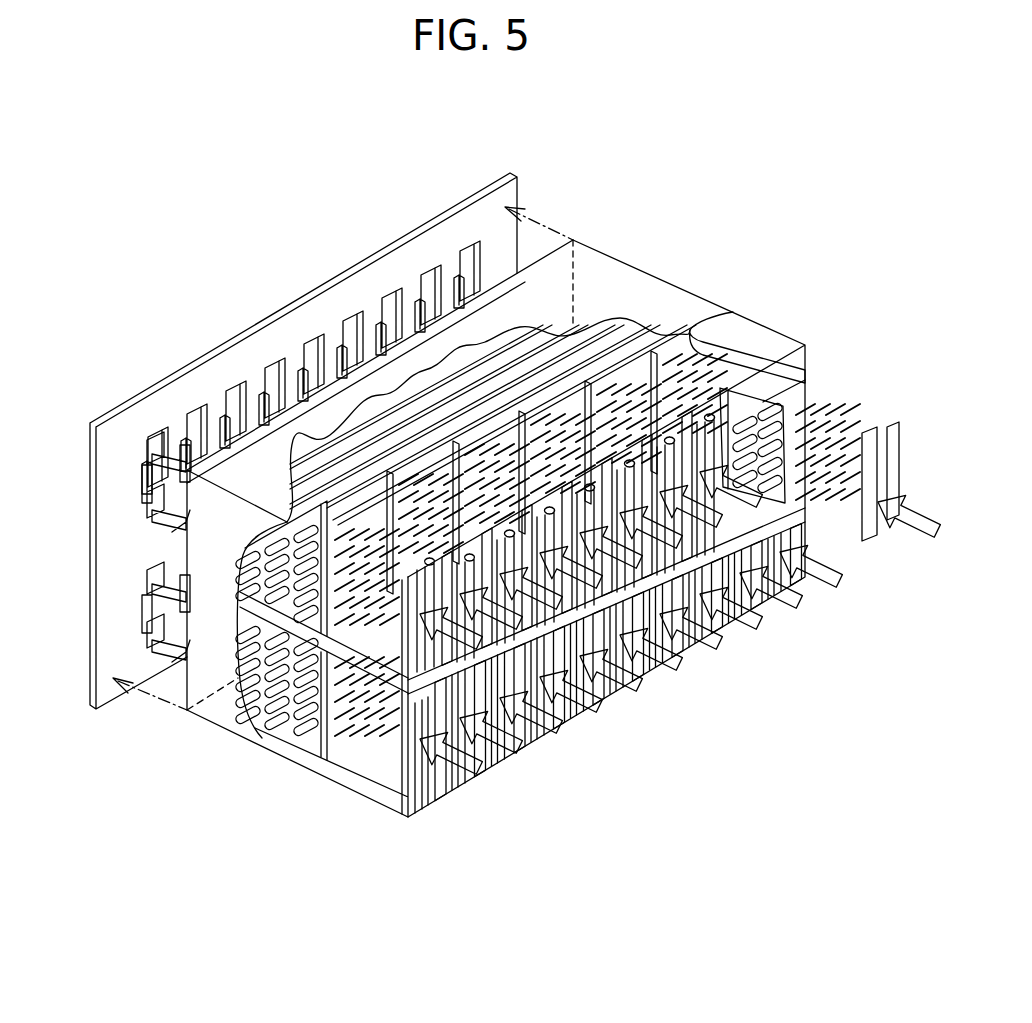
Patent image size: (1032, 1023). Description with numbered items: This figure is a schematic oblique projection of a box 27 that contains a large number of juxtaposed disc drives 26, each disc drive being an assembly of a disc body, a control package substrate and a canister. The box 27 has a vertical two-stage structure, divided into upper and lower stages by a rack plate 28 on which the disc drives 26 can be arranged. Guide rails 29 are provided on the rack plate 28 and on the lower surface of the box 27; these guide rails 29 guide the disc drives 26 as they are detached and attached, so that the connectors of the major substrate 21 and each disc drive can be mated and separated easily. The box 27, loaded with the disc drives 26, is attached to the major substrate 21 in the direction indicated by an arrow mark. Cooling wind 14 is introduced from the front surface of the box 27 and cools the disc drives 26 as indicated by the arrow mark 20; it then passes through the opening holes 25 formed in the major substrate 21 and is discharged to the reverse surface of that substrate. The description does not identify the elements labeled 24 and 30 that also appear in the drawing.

The cooling wind 14 is at (443, 760).
The arrow mark 20 is at (327, 710).
The major substrate 21 is at (245, 332).
The retaining clip 24 is at (177, 530).
The opening holes 25 is at (385, 298).
The disc drives 26 is at (598, 348).
The box 27 is at (658, 298).
The rack plate 28 is at (675, 528).
The guide rails 29 is at (640, 653).
The insertion direction 30 is at (549, 228).